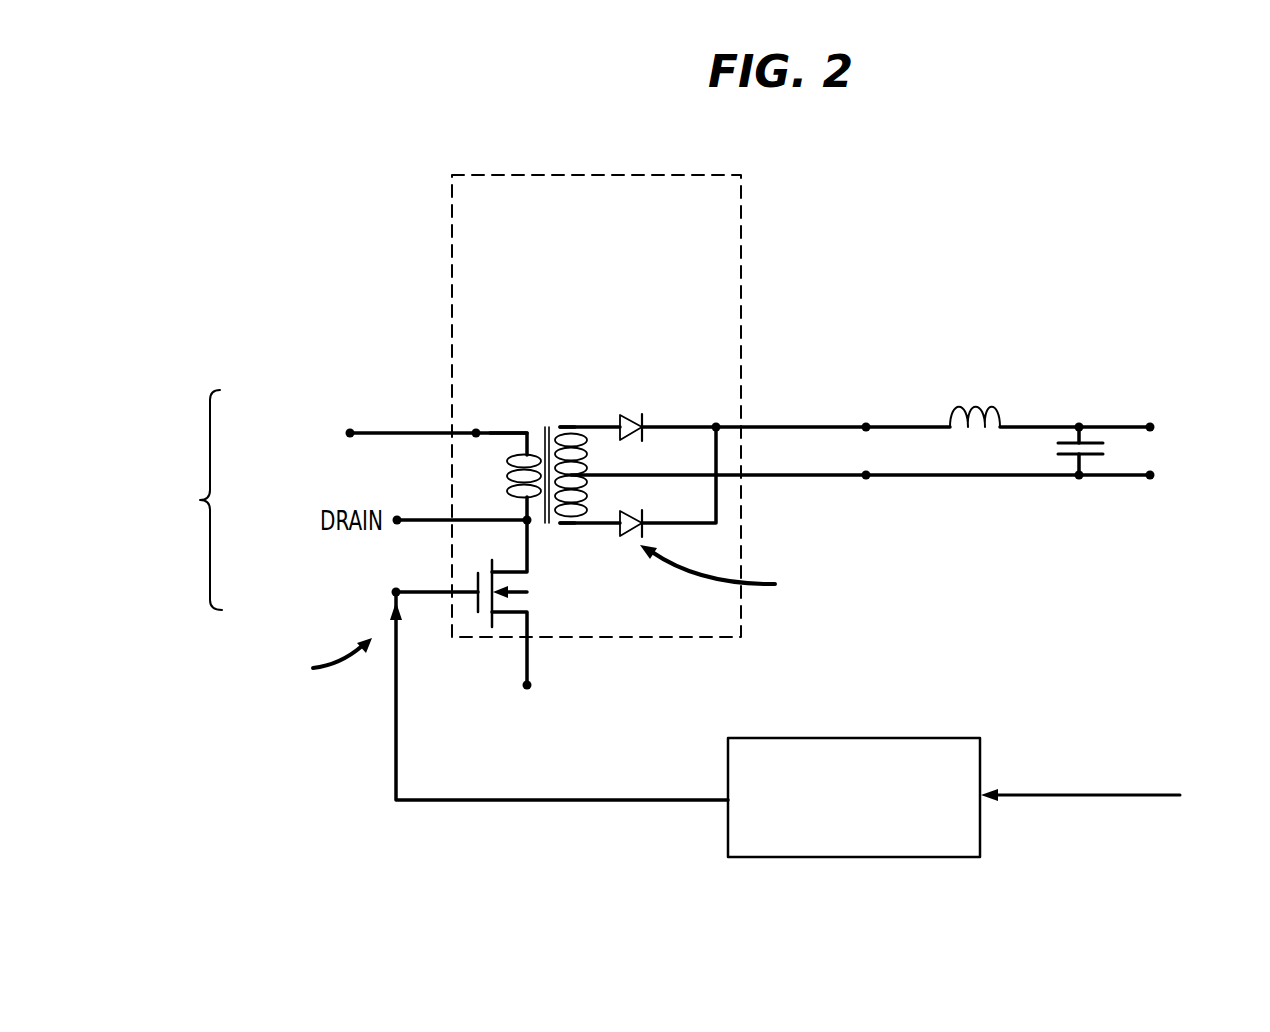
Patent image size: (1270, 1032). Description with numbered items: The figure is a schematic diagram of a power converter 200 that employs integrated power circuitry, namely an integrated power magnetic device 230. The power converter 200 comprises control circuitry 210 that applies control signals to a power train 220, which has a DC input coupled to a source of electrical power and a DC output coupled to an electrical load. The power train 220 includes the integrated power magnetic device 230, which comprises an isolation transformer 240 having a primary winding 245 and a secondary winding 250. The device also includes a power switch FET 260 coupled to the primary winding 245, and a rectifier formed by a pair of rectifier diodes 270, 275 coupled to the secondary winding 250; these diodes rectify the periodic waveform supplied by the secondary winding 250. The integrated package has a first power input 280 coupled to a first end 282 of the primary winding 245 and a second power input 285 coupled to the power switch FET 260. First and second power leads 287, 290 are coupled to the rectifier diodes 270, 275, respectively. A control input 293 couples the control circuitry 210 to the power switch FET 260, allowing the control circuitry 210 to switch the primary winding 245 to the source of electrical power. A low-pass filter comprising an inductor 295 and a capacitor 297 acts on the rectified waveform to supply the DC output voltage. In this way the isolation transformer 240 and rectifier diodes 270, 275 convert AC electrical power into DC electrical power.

The power converter 200 is at (903, 214).
The control circuitry 210 is at (875, 857).
The power train 220 is at (187, 500).
The integrated power magnetic device 230 is at (452, 236).
The isolation transformer 240 is at (545, 408).
The primary winding 245 is at (485, 487).
The secondary winding 250 is at (598, 408).
The power switch FET 260 is at (478, 605).
The rectifier diode 270 is at (652, 420).
The rectifier diode 275 is at (648, 530).
The first power input 280 is at (350, 436).
The first end of the primary winding 282 is at (498, 430).
The second power input 285 is at (532, 683).
The first power lead 287 is at (565, 424).
The second power lead 290 is at (563, 525).
The control input 293 is at (435, 590).
The inductor 295 is at (1000, 422).
The capacitor 297 is at (1095, 455).